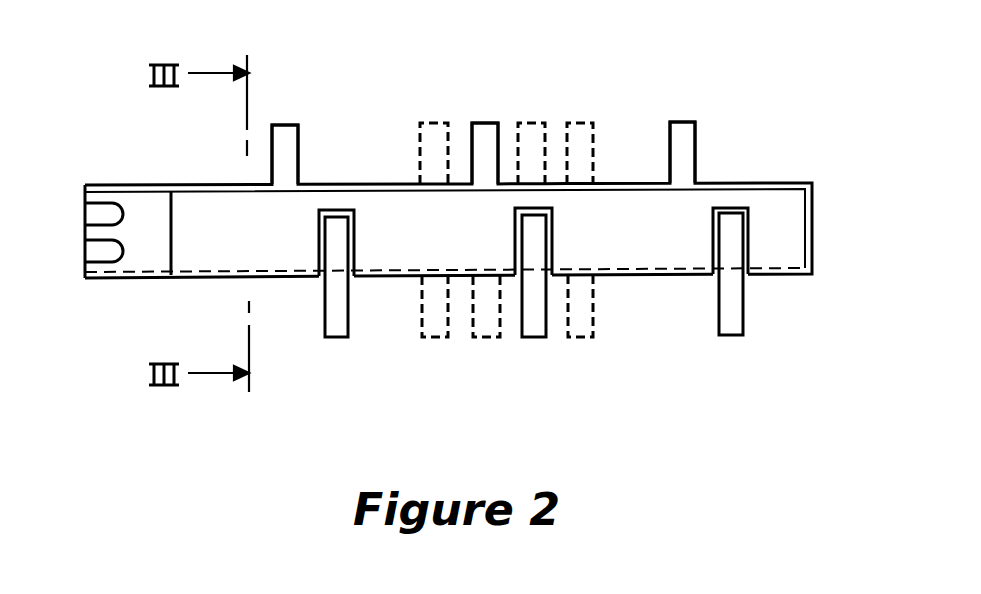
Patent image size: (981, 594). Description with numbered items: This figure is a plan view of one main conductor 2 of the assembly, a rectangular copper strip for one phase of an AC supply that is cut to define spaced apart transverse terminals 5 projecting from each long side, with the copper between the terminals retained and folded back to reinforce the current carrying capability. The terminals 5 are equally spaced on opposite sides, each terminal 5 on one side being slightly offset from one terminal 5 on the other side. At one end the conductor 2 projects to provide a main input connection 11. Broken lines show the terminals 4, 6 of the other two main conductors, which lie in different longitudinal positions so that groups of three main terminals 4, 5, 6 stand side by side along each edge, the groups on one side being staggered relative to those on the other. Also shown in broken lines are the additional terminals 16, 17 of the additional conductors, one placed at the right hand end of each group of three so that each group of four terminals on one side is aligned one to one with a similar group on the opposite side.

The main conductor 2 is at (638, 135).
The transverse terminal 4 is at (432, 130).
The transverse terminal 5 is at (480, 132).
The transverse terminal 6 is at (530, 130).
The main input connection 11 is at (140, 203).
The additional terminal 16 is at (580, 130).
The additional terminal 17 is at (435, 335).